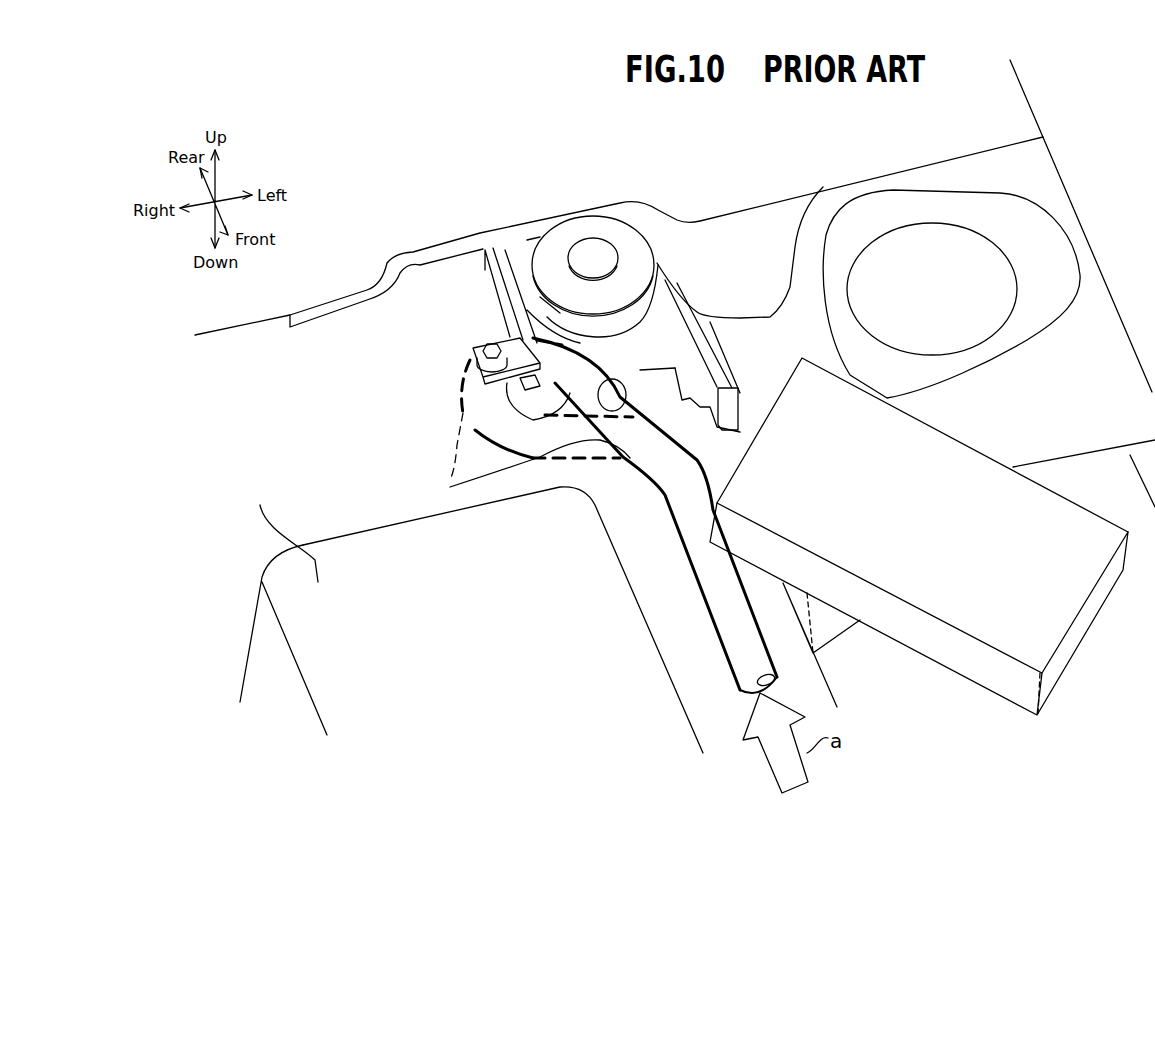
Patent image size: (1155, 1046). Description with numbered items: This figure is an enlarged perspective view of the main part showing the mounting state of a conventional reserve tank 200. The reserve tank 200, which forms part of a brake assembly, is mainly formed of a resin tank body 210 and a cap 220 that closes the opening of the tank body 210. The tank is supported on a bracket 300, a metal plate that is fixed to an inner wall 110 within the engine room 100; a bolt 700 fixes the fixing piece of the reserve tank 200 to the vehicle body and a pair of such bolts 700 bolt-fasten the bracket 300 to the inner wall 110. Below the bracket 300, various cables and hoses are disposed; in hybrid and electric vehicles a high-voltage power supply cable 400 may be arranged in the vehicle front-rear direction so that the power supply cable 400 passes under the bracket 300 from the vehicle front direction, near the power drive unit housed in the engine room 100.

The engine room 100 is at (339, 425).
The inner wall 110 is at (753, 430).
The reserve tank 200 is at (480, 282).
The tank body 210 is at (518, 257).
The cap 220 is at (598, 230).
The bracket 300 is at (723, 340).
The power supply cable 400 is at (467, 440).
The bolt 700 is at (490, 346).